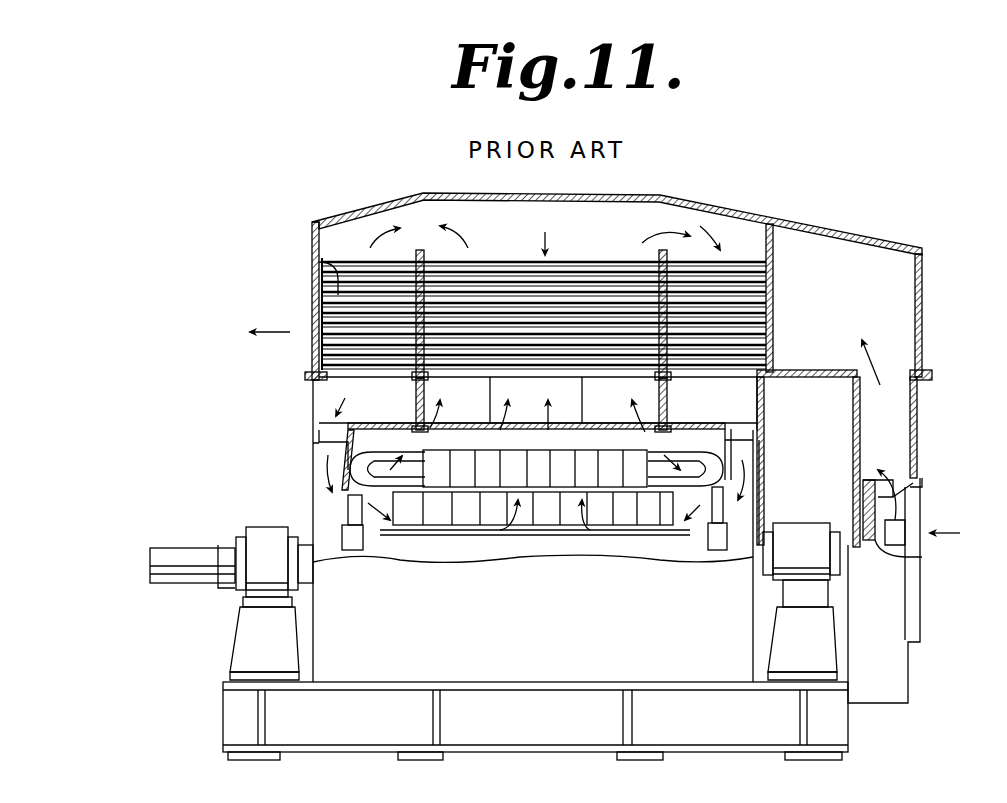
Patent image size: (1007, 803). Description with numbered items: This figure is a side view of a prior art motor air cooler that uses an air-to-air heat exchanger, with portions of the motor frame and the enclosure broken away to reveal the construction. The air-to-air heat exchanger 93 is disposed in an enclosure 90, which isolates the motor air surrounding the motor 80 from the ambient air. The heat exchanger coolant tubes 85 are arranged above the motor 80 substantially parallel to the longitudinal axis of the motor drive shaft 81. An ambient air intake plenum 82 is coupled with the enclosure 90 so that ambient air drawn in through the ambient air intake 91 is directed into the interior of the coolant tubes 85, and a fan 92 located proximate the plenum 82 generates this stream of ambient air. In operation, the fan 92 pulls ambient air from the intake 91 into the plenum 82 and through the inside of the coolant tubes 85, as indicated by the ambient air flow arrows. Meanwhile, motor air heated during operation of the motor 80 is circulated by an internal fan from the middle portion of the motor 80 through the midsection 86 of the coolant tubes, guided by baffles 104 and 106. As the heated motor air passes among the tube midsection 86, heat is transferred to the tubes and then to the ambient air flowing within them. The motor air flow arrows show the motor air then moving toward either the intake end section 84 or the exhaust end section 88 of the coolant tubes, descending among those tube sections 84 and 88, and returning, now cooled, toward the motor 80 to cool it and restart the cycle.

The motor 80 is at (402, 660).
The motor drive shaft 81 is at (186, 552).
The ambient air intake plenum 82 is at (916, 310).
The intake end section of the coolant tubes 84 is at (752, 272).
The heat exchanger coolant tubes 85 is at (494, 282).
The midsection of the coolant tubes 86 is at (567, 277).
The exhaust end section of the coolant tubes 88 is at (312, 262).
The enclosure 90 is at (704, 206).
The ambient air intake 91 is at (912, 506).
The fan 92 is at (802, 532).
The air-to-air heat exchanger 93 is at (547, 229).
The baffle 104 is at (416, 402).
The baffle 106 is at (668, 402).